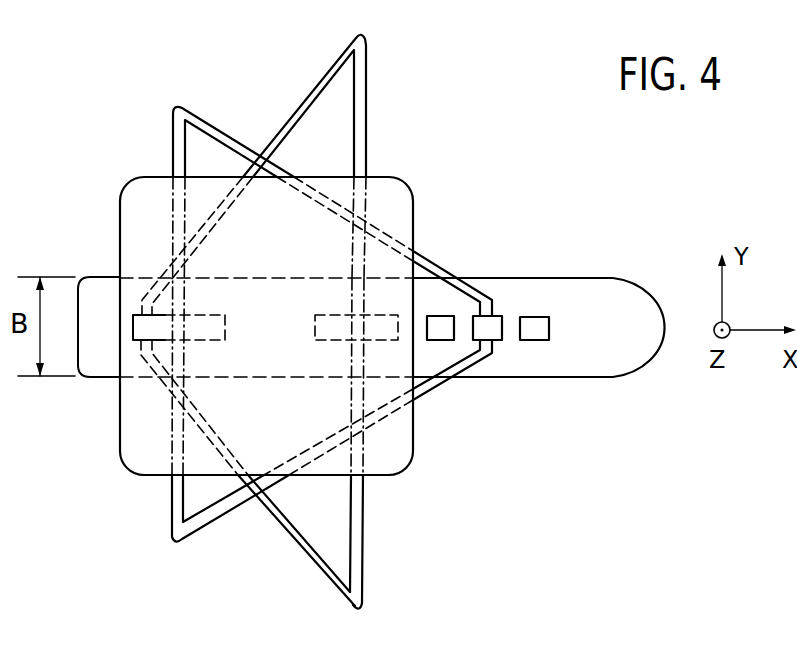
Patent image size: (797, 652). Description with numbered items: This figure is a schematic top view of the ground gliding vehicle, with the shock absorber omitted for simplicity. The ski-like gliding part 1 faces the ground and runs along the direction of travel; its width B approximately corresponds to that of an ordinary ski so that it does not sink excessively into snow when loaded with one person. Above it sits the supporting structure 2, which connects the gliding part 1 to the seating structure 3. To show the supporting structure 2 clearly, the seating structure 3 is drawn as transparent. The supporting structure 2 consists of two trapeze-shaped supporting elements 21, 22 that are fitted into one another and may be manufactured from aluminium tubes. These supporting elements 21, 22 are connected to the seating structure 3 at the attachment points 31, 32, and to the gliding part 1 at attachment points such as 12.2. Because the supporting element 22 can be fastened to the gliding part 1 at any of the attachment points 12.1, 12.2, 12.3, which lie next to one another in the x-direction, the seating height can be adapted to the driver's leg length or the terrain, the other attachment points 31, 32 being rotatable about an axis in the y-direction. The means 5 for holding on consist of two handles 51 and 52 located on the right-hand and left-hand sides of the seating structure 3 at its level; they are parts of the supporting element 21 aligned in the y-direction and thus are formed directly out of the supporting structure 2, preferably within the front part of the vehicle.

The gliding part 1 is at (95, 363).
The supporting structure 2 is at (316, 474).
The supporting element 21 is at (258, 524).
The supporting element 22 is at (208, 512).
The seating structure 3 is at (135, 202).
The attachment point 31 is at (330, 322).
The attachment point 32 is at (200, 315).
The means for holding on 5 is at (298, 319).
The handle 51 is at (354, 503).
The handle 52 is at (356, 120).
The attachment point 12.1 is at (433, 327).
The attachment point 12.2 is at (497, 323).
The attachment point 12.3 is at (533, 323).